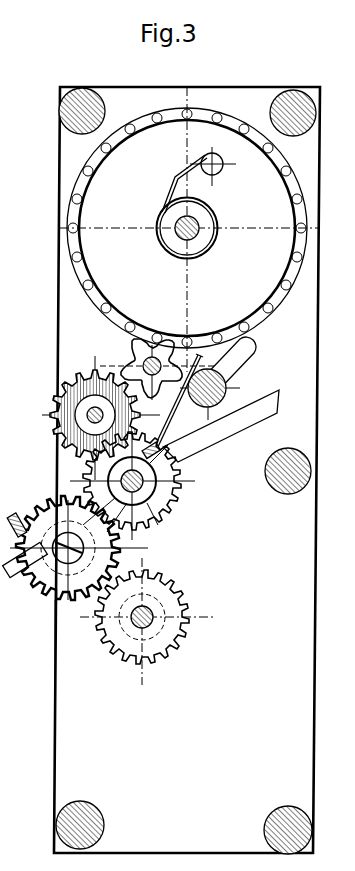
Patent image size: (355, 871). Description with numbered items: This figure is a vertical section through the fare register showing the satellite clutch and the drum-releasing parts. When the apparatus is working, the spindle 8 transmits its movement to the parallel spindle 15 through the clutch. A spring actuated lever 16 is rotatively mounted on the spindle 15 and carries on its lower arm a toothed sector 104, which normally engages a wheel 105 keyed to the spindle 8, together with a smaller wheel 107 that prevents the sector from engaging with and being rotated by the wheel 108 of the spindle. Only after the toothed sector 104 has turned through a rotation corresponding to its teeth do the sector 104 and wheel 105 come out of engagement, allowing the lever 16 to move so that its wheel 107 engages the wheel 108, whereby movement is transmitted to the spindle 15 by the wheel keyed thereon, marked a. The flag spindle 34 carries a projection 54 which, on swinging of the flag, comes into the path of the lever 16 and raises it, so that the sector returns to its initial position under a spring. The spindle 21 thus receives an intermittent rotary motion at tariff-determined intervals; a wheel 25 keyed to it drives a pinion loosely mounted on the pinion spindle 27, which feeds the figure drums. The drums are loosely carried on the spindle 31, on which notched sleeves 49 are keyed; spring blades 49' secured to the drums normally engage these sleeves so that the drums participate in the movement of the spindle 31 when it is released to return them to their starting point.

The notched sleeve 49 is at (176, 228).
The spindle 31 is at (196, 238).
The spring blade 49' is at (176, 184).
The pinion spindle 27 is at (126, 356).
The projection 54 is at (247, 357).
The flag spindle 34 is at (223, 395).
The spring actuated lever 16 is at (221, 428).
The wheel 25 is at (60, 393).
The spindle 21 is at (87, 424).
The spindle 15 is at (155, 522).
The wheel 108 is at (168, 500).
The wheel 108a a is at (232, 492).
The smaller wheel 107 is at (68, 564).
The toothed sector 104 is at (45, 590).
The wheel 105 is at (176, 592).
The spindle 8 is at (147, 630).